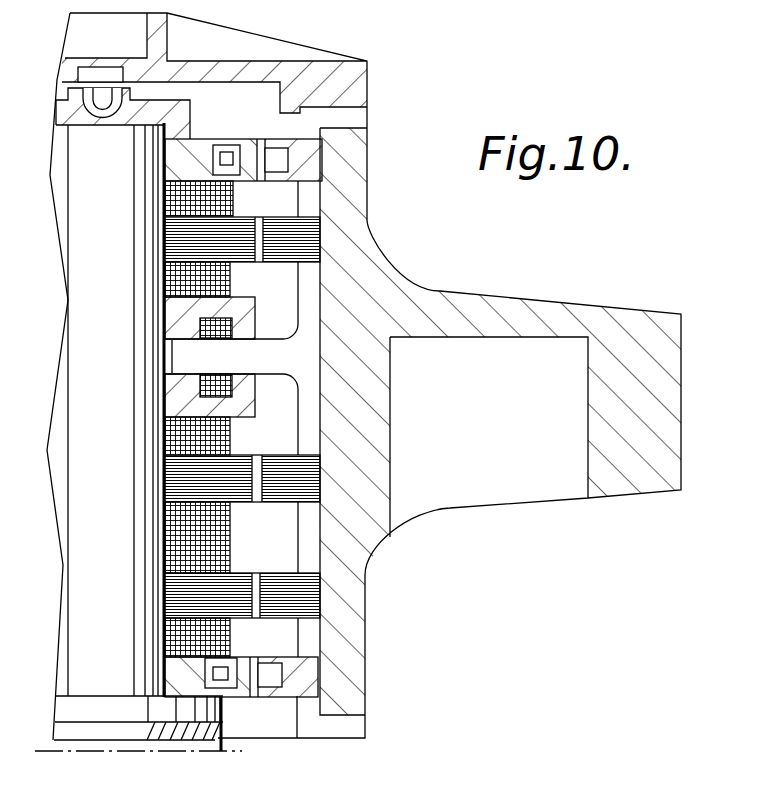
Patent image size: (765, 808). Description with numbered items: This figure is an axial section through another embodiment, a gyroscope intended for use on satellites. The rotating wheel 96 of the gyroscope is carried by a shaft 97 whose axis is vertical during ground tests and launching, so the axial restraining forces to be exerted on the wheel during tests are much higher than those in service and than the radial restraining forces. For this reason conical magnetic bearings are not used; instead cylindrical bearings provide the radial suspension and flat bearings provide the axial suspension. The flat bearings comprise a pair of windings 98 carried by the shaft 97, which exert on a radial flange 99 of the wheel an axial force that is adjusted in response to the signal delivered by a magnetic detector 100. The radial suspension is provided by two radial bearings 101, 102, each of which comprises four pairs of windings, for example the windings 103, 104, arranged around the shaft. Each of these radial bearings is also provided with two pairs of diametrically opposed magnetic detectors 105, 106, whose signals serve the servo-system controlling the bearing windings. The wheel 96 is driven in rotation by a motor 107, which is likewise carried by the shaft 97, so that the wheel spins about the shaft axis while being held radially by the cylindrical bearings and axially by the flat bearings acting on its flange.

The rotating wheel 96 is at (345, 176).
The shaft 97 is at (88, 573).
The windings 98 is at (222, 315).
The radial flange 99 is at (198, 359).
The magnetic detector 100 is at (103, 113).
The radial bearing 101 is at (328, 586).
The radial bearing 102 is at (328, 230).
The winding 103 is at (217, 552).
The winding 104 is at (215, 633).
The magnetic detector 105 is at (290, 673).
The magnetic detector 106 is at (296, 152).
The motor 107 is at (294, 452).